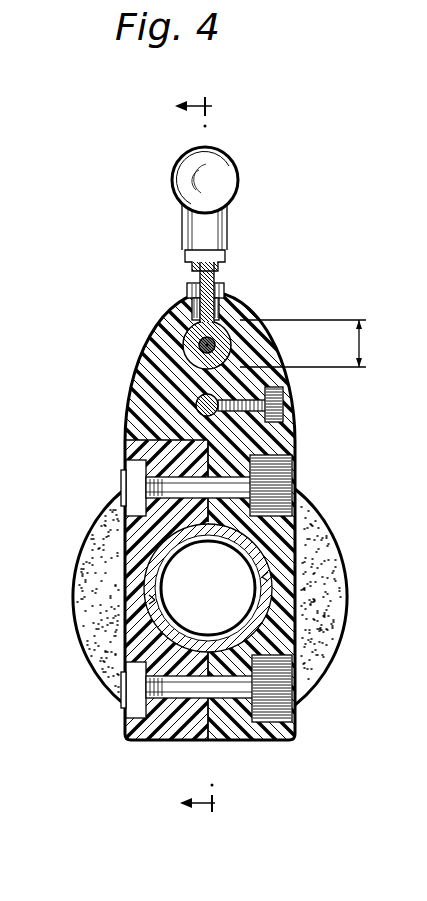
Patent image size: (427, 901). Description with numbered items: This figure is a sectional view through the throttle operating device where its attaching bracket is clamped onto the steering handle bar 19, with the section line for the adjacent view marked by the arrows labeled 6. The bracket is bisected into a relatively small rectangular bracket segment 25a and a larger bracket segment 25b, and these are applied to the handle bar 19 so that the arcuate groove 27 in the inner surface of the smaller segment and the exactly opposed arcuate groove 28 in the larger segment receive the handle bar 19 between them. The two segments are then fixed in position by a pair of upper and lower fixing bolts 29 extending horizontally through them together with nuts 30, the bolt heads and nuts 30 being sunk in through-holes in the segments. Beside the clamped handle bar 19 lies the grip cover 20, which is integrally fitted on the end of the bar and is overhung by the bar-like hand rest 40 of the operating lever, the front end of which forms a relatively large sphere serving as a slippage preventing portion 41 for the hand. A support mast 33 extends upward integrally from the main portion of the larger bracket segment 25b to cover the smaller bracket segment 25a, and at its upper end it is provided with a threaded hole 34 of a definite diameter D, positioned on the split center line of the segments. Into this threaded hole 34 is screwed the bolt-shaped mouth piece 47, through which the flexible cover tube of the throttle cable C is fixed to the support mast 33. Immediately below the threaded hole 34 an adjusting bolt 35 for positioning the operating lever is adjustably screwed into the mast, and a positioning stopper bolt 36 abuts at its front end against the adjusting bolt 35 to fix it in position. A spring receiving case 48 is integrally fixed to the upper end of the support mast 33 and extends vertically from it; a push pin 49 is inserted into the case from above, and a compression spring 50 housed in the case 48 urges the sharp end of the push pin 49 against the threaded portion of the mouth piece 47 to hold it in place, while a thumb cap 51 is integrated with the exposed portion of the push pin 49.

The slippage preventing portion 41 is at (217, 173).
The hand rest 40 is at (190, 226).
The thumb cap 51 is at (224, 258).
The push pin 49 is at (222, 272).
The spring receiving case 48 is at (188, 287).
The compression spring 50 is at (225, 306).
The support mast 33 is at (165, 318).
The threaded hole 34 is at (232, 345).
The mouth piece 47 is at (185, 355).
The adjusting bolt 35 is at (198, 406).
The positioning stopper bolt 36 is at (283, 404).
The nuts 30 is at (128, 482).
The fixing bolts 29 is at (293, 473).
The steering handle bar 19 is at (160, 585).
The arcuate groove 28 is at (262, 577).
The arcuate groove 27 is at (155, 600).
The grip cover 20 is at (330, 620).
The bracket segment 25a is at (152, 738).
The bracket segment 25b is at (243, 738).
The throttle cable C is at (205, 345).
The diameter D is at (313, 343).
The section line 6- 6 is at (195, 460).